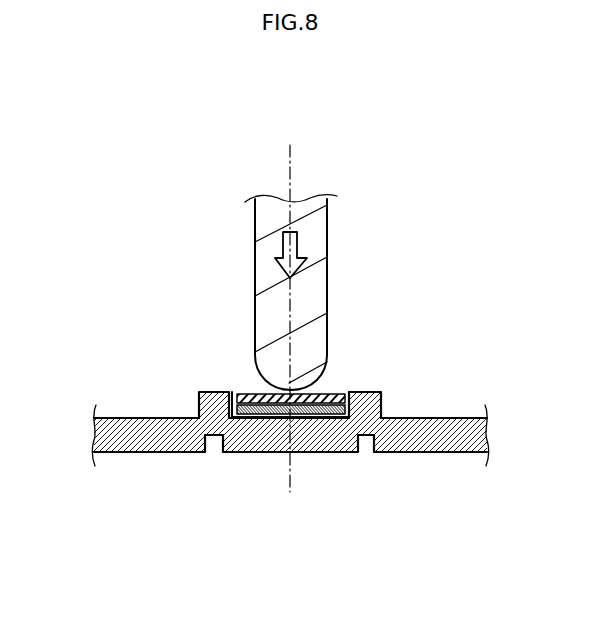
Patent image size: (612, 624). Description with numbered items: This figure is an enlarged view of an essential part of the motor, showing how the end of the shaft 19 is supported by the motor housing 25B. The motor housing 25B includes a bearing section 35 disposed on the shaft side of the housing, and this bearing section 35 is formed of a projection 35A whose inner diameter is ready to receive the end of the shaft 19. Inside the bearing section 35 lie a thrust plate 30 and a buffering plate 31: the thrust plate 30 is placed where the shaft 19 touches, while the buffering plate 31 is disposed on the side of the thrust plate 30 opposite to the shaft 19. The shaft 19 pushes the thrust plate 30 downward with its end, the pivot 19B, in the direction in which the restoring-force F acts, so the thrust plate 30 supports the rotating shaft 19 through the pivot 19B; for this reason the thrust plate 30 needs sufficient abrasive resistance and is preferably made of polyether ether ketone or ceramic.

The shaft 19 is at (313, 222).
The pivot 19B is at (283, 388).
The restoring-force F is at (282, 252).
The bearing section 35 is at (347, 390).
The projection 35A is at (383, 390).
The thrust plate 30 is at (323, 410).
The buffering plate 31 is at (343, 398).
The motor housing 25B is at (445, 428).